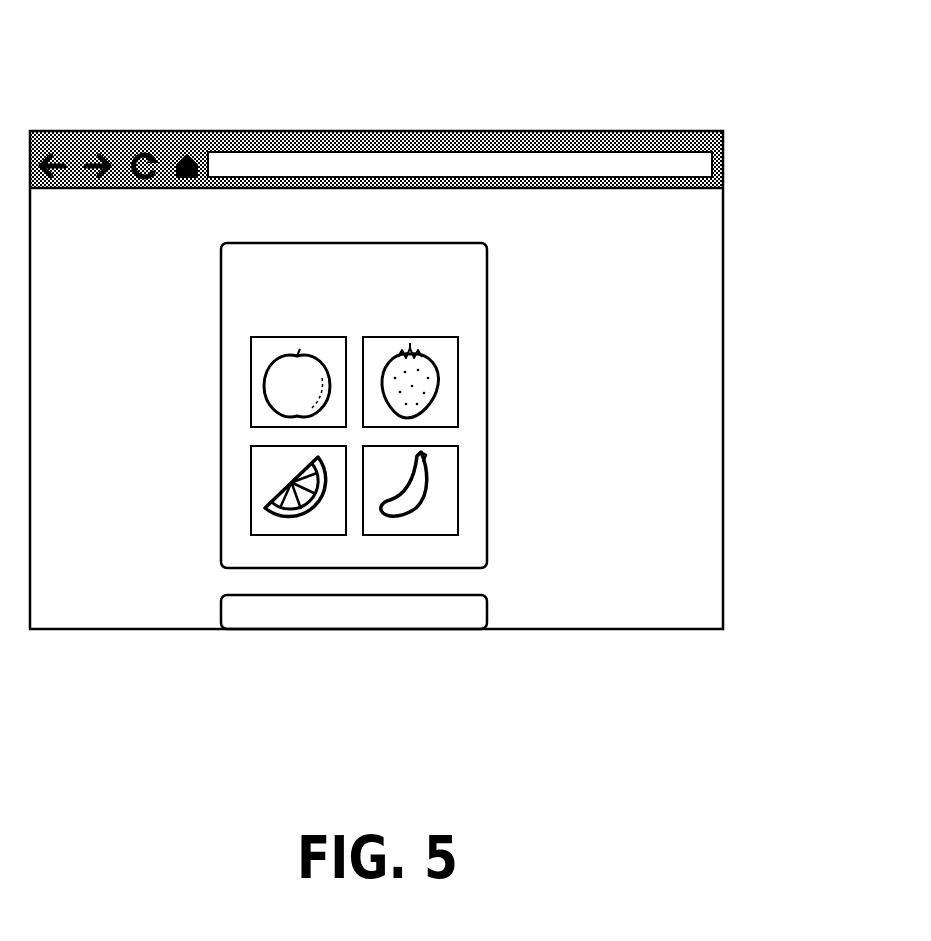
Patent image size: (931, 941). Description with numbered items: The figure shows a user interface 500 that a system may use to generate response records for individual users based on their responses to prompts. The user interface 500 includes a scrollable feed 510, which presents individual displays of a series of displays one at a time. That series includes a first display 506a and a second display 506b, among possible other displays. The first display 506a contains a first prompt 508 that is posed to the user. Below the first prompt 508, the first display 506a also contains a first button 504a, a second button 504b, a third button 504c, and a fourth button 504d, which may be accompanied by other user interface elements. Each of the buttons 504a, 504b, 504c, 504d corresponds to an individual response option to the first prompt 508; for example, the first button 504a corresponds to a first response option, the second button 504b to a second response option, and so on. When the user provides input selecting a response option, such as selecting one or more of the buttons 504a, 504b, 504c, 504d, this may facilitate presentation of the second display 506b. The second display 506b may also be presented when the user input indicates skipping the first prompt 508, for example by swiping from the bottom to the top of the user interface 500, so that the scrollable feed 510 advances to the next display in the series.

The user interface 500 is at (664, 108).
The first button 504a is at (251, 384).
The second button 504b is at (251, 490).
The third button 504c is at (458, 382).
The fourth button 504d is at (458, 490).
The first display 506a is at (221, 283).
The second display 506b is at (488, 612).
The first prompt 508 is at (453, 287).
The scrollable feed 510 is at (678, 285).